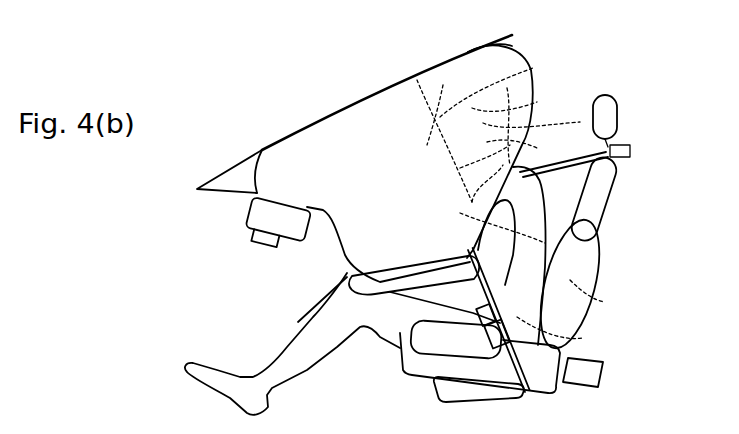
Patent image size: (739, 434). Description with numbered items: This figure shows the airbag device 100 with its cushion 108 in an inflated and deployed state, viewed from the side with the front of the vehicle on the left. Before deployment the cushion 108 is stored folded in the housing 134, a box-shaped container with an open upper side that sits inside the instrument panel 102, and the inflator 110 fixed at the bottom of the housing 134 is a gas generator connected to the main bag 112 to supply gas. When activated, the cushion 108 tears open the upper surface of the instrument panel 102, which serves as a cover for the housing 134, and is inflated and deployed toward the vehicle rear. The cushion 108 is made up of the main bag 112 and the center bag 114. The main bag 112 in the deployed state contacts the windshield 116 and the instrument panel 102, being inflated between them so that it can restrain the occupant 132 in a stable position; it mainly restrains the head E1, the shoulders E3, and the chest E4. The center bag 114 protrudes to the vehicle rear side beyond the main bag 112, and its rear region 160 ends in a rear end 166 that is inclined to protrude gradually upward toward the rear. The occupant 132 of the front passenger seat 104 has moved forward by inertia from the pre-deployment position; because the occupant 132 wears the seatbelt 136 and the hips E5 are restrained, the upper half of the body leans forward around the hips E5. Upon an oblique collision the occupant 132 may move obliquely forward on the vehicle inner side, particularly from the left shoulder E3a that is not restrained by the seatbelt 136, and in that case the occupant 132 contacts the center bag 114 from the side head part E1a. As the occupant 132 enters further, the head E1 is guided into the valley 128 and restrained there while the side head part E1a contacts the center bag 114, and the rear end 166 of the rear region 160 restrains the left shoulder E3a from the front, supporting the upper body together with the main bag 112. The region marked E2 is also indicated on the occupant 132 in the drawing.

The airbag device 100 is at (238, 135).
The instrument panel 102 is at (230, 188).
The front passenger seat 104 is at (630, 156).
The cushion 108 is at (380, 87).
The inflator 110 is at (263, 244).
The main bag 112 is at (420, 80).
The center bag 114 is at (483, 47).
The windshield 116 is at (457, 52).
The valley 128 is at (531, 72).
The occupant 132 is at (600, 258).
The housing 134 is at (248, 210).
The seatbelt 136 is at (538, 178).
The rear region 160 is at (533, 68).
The rear end 166 is at (617, 117).
The head E1 is at (522, 82).
The side head part E1a is at (520, 110).
The restraint region E2 is at (520, 160).
The shoulders E3 is at (540, 193).
The left shoulder E3a is at (543, 212).
The chest E4 is at (605, 302).
The hips E5 is at (583, 338).